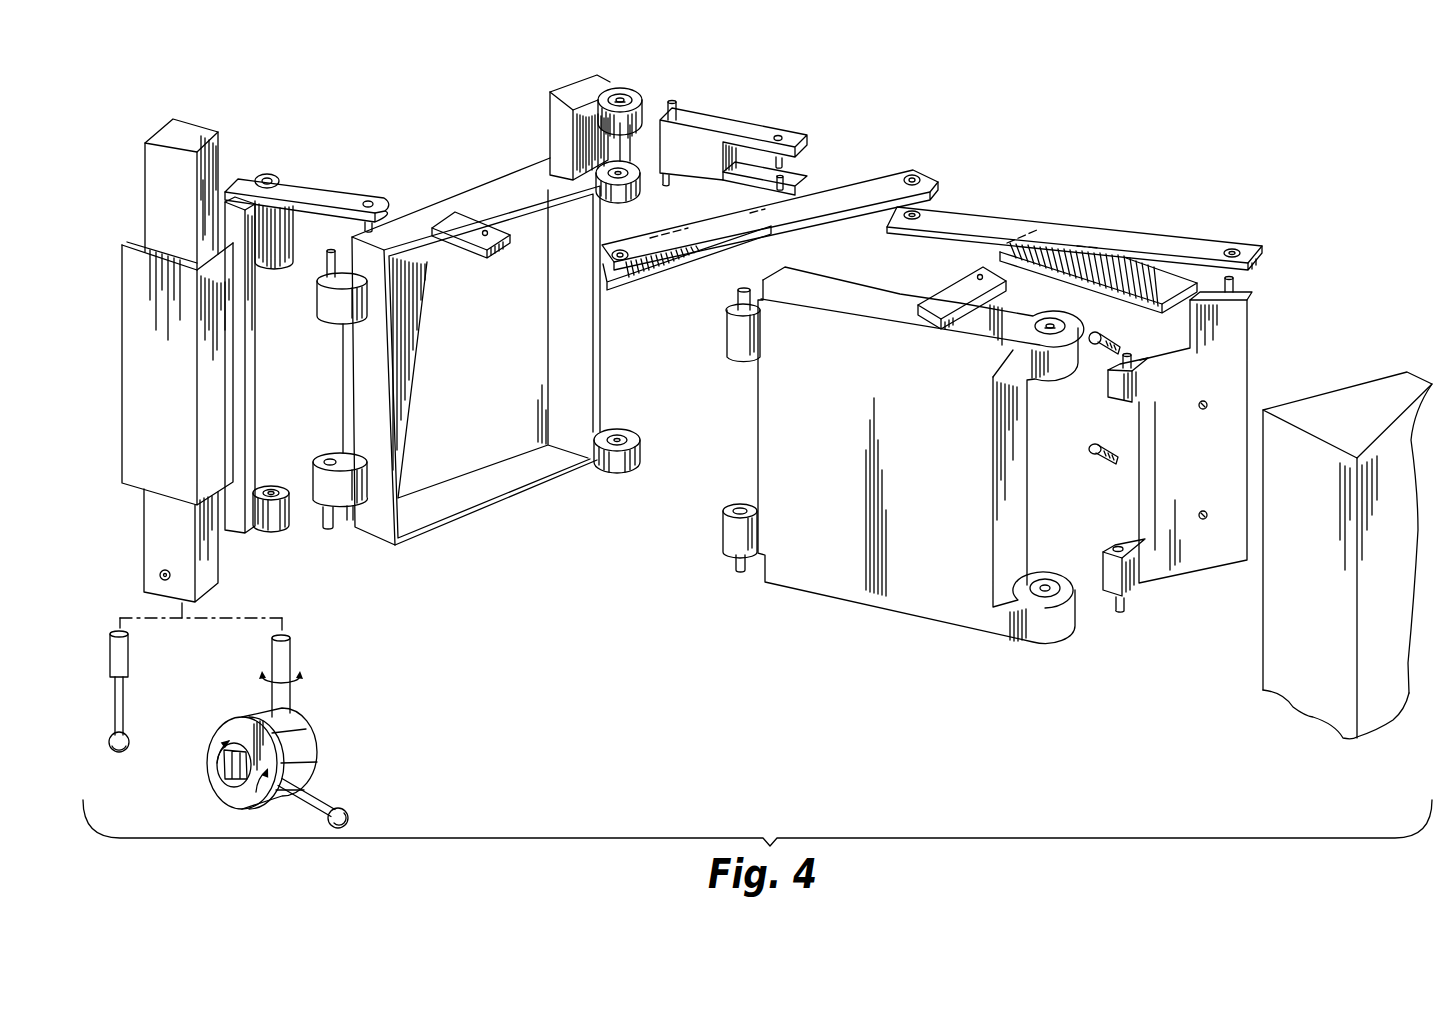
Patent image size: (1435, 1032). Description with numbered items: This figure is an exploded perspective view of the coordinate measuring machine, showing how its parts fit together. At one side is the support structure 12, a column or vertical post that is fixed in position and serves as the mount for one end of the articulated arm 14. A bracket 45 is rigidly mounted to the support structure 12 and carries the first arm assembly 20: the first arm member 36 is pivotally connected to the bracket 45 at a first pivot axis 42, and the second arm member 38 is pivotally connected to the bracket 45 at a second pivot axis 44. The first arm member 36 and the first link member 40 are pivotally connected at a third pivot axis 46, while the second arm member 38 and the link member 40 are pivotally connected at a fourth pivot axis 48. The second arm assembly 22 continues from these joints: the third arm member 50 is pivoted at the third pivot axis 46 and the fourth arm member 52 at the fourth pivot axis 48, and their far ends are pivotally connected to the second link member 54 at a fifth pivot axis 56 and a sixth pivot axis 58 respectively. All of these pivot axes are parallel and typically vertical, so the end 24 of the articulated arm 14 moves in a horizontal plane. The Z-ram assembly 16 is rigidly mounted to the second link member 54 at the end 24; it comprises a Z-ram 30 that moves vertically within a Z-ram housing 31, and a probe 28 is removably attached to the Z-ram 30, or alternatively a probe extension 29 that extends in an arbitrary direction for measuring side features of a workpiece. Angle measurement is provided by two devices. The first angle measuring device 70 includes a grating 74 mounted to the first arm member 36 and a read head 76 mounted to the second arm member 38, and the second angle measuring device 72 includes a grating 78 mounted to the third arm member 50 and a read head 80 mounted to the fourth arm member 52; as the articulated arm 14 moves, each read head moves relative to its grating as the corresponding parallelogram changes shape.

The support structure 12 is at (1355, 392).
The articulated arm 14 is at (477, 137).
The Z-ram assembly 16 is at (150, 124).
The first arm assembly 20 is at (412, 182).
The second arm assembly 22 is at (965, 201).
The end of articulated arm 24 is at (228, 192).
The probe 28 is at (126, 749).
The probe extension 29 is at (318, 765).
The Z-ram 30 is at (145, 160).
The Z-ram housing 31 is at (137, 378).
The first arm member 36 is at (1143, 239).
The second arm member 38 is at (845, 291).
The first link member 40 is at (708, 121).
The first pivot axis 42 is at (1234, 281).
The second pivot axis 44 is at (1137, 364).
The bracket 45 is at (1240, 364).
The third pivot axis 46 is at (782, 139).
The fourth pivot axis 48 is at (624, 101).
The third arm member 50 is at (833, 201).
The fourth arm member 52 is at (483, 182).
The second link member 54 is at (330, 188).
The fifth pivot axis 56 is at (371, 203).
The sixth pivot axis 58 is at (268, 173).
The first angle measuring device 70 is at (921, 290).
The second angle measuring device 72 is at (476, 265).
The grating 74 is at (1047, 250).
The read head 76 is at (968, 283).
The grating 78 is at (664, 288).
The read head 80 is at (494, 245).